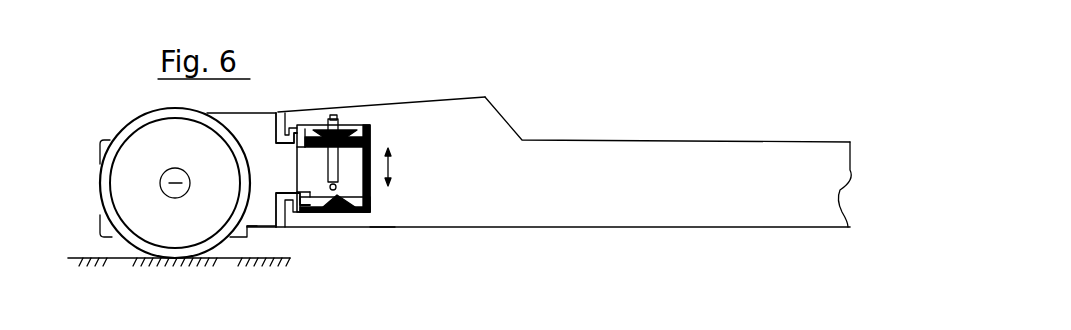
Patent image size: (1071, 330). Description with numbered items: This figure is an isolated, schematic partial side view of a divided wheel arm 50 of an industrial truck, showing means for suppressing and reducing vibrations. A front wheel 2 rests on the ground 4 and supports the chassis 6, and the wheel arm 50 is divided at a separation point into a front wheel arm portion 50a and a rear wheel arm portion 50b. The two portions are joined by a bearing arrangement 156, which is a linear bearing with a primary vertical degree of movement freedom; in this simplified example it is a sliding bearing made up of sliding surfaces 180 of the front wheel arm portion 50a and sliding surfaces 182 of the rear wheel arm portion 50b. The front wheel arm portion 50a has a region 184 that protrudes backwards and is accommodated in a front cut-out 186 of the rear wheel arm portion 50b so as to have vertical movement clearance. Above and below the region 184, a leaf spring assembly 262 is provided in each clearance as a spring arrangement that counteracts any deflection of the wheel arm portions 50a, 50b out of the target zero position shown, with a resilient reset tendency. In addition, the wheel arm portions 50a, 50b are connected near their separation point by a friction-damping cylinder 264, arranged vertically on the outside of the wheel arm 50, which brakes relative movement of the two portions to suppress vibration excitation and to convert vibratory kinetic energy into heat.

The front wheel 2 is at (120, 175).
The ground 4 is at (85, 250).
The chassis 6 is at (627, 170).
The wheel arm 50 is at (358, 121).
The front wheel arm portion 50a is at (257, 217).
The rear wheel arm portion 50b is at (380, 222).
The bearing arrangement 156 is at (374, 121).
The sliding surfaces 180 is at (300, 124).
The sliding surfaces 182 is at (296, 137).
The region 184 is at (285, 162).
The front cut-out 186 is at (373, 206).
The leaf spring assembly 262 is at (371, 130).
The friction-damping cylinder 264 is at (375, 143).